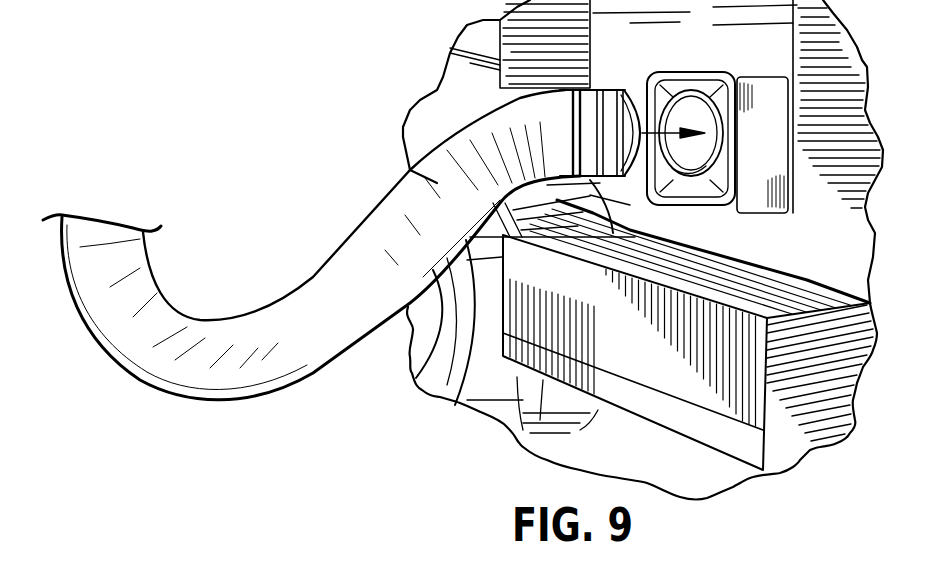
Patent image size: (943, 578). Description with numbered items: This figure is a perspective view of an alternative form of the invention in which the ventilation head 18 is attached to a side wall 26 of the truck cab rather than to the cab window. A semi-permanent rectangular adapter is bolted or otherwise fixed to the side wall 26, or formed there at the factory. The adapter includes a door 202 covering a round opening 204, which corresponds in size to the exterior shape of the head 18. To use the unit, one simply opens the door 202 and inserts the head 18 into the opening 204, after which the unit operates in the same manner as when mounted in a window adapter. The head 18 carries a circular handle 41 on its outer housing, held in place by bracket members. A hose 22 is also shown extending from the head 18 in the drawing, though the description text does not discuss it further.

The hose 22 is at (338, 253).
The coupling ring 41 is at (598, 137).
The nozzle fitting 18 is at (605, 86).
The housing body 26 is at (715, 41).
The inlet port 204 is at (697, 107).
The panel 202 is at (775, 138).